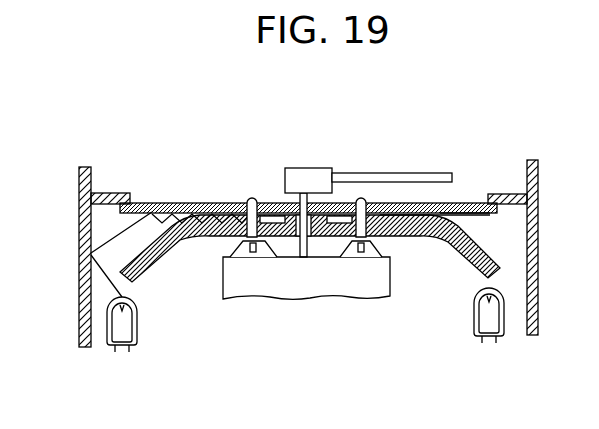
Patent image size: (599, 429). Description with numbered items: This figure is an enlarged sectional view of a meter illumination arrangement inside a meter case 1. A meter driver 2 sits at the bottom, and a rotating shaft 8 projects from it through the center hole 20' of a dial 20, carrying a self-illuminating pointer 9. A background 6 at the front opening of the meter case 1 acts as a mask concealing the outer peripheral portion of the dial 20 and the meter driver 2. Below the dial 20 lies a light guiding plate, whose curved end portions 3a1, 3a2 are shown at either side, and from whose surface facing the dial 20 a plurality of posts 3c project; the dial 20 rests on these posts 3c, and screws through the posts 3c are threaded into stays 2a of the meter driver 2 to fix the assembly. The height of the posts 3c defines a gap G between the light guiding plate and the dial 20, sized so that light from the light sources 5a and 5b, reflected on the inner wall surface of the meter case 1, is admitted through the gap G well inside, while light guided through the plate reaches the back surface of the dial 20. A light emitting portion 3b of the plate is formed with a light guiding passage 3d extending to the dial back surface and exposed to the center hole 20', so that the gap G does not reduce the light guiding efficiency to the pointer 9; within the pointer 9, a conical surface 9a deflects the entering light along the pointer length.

The meter case 1 is at (81, 307).
The background 6 is at (80, 190).
The dial 20 is at (308, 161).
The posts 3c is at (238, 203).
The conical surface 9a is at (262, 200).
The center hole 20' is at (320, 152).
The light guiding passage 3d is at (352, 200).
The pointer 9 is at (397, 173).
The gap G is at (452, 207).
The stays 2a is at (232, 250).
The light source 5a is at (118, 352).
The arcuate reflector left portion 3a1 is at (140, 283).
The light emitting portion 3b is at (296, 242).
The rotating shaft 8 is at (314, 240).
The meter driver 2 is at (347, 283).
The arcuate reflector right portion 3a2 is at (462, 258).
The light source 5b is at (487, 343).